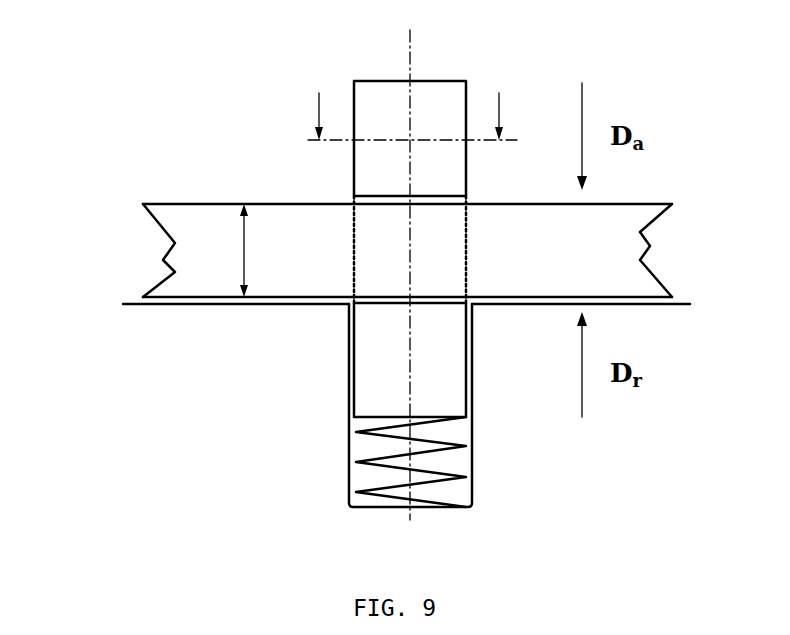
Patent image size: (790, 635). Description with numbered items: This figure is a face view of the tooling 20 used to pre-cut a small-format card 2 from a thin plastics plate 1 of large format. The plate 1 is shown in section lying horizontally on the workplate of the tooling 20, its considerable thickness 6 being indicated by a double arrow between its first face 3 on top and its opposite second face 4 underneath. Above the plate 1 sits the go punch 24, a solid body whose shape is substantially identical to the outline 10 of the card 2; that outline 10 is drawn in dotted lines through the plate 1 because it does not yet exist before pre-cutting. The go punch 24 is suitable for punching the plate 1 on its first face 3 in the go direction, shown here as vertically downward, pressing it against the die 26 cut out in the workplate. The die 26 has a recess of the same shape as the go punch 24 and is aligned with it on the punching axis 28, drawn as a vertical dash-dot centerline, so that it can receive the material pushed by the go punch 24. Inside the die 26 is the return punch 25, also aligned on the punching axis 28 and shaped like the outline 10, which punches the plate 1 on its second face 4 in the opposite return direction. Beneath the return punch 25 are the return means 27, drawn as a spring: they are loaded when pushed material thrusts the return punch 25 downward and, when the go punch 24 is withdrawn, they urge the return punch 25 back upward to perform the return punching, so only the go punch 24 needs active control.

The tooling 20 is at (190, 58).
The plate 1 is at (208, 203).
The first face 3 is at (227, 204).
The card 2 is at (437, 287).
The second face 4 is at (228, 297).
The thickness 6 is at (258, 250).
The outline 10 is at (466, 245).
The go punch 24 is at (380, 92).
The return punch 25 is at (368, 363).
The die 26 is at (348, 318).
The return means 27 is at (373, 468).
The punching axis 28 is at (410, 32).